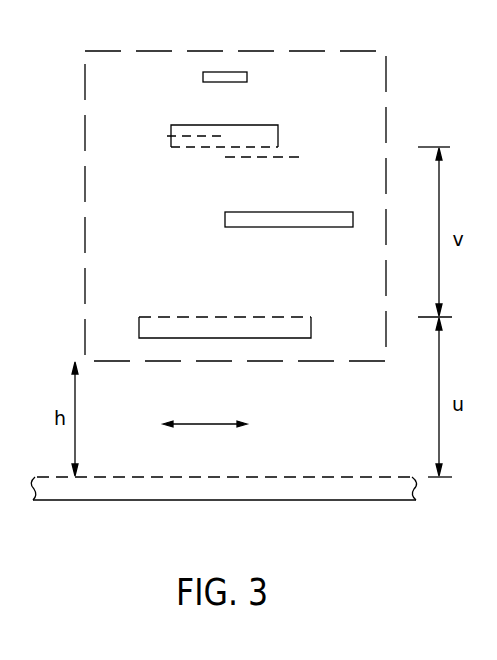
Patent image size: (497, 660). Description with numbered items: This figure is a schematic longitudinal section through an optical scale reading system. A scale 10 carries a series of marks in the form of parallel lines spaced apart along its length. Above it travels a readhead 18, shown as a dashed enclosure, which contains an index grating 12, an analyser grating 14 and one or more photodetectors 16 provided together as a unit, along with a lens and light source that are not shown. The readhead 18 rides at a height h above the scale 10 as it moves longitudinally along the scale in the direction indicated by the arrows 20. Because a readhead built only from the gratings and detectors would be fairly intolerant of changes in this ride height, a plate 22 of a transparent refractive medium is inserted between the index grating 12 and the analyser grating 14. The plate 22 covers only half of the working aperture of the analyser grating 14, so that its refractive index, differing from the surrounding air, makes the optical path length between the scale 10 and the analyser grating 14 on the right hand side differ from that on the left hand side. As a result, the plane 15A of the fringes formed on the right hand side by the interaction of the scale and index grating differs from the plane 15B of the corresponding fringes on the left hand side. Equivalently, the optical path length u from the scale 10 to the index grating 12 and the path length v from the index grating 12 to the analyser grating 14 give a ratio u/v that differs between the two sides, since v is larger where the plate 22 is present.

The scale 10 is at (313, 477).
The index grating 12 is at (311, 328).
The analyser grating 14 is at (263, 126).
The plane of the fringes on the right hand side 15A is at (290, 158).
The plane of the fringes on the left hand side 15B is at (145, 136).
The photodetectors 16 is at (215, 71).
The readhead 18 is at (85, 98).
The arrows 20 is at (196, 424).
The plate 22 is at (285, 228).